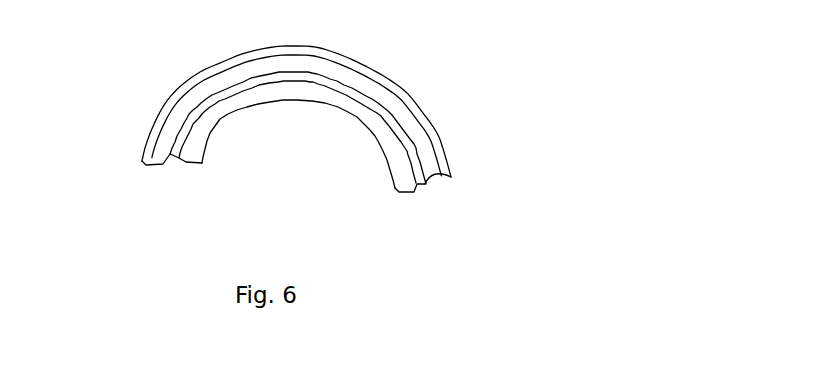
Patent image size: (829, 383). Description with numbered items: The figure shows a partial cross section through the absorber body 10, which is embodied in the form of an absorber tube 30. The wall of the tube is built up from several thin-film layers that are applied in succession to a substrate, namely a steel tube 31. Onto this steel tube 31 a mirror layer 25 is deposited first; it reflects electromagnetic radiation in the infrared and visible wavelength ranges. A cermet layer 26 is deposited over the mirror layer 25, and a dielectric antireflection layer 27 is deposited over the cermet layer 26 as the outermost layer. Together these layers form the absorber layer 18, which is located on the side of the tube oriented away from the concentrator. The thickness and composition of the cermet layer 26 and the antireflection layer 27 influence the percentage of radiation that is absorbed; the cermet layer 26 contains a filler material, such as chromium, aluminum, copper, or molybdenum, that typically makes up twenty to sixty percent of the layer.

The absorber body 10 is at (297, 122).
The absorber tube 30 is at (297, 122).
The absorber layer 18 is at (399, 65).
The dielectric antireflection layer 27 is at (151, 110).
The cermet layer 26 is at (141, 159).
The mirror layer 25 is at (175, 162).
The steel tube 31 is at (387, 180).